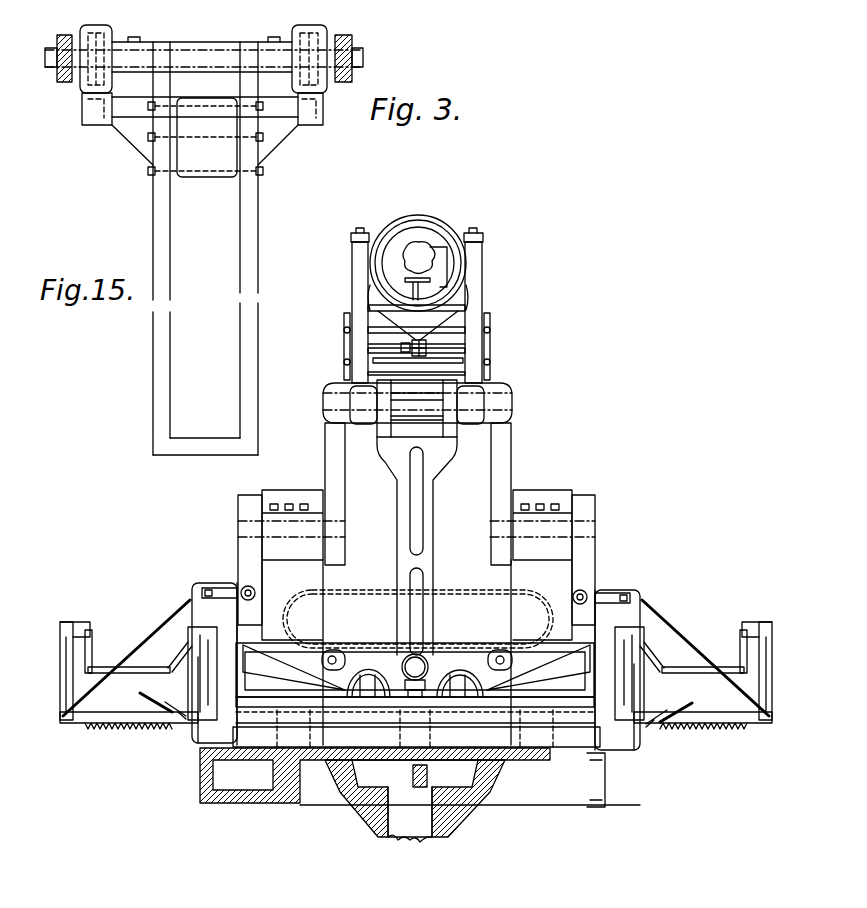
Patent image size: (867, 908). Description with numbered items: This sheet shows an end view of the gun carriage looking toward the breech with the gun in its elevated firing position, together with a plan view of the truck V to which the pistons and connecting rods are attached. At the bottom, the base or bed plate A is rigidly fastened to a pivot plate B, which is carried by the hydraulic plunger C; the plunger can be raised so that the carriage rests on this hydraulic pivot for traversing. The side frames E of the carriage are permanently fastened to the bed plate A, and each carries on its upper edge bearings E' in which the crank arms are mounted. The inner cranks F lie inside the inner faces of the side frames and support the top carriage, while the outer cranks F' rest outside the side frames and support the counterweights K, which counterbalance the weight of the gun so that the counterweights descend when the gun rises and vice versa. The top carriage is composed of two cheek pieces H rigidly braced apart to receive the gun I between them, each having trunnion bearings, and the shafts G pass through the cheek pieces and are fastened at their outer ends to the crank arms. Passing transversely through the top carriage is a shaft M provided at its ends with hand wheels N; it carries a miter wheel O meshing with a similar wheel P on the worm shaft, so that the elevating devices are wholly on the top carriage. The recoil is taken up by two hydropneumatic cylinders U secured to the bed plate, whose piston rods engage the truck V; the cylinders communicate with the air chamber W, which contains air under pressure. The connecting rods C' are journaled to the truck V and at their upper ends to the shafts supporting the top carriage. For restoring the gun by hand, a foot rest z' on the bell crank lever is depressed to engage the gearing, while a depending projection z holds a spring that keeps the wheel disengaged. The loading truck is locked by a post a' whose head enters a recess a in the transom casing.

In FIG. 15, the truck or cross head V is at (204, 236).
In FIG. 3, the gun I is at (453, 230).
In FIG. 3, the cheek pieces H is at (358, 297).
In FIG. 3, the shaft M is at (458, 350).
In FIG. 3, the hand wheels N is at (492, 360).
In FIG. 3, the miter wheel O is at (402, 343).
In FIG. 3, the miter wheel P is at (427, 345).
In FIG. 3, the shafts G is at (335, 410).
In FIG. 3, the inner cranks F is at (418, 494).
In FIG. 3, the connecting rod C' is at (417, 546).
In FIG. 3, the bearings E' is at (416, 511).
In FIG. 3, the outer cranks F' is at (403, 560).
In FIG. 3, the side frames E is at (416, 655).
In FIG. 3, the counterweights K is at (200, 593).
In FIG. 3, the foot rest z' is at (401, 703).
In FIG. 3, the depending projection z is at (416, 720).
In FIG. 3, the air chamber W is at (455, 598).
In FIG. 3, the base or bed plate A is at (416, 695).
In FIG. 3, the hydropneumatic cylinders U is at (370, 670).
In FIG. 3, the recess a is at (407, 700).
In FIG. 3, the post a' is at (423, 705).
In FIG. 3, the pivot plate B is at (385, 755).
In FIG. 3, the hydraulic plunger C is at (410, 814).